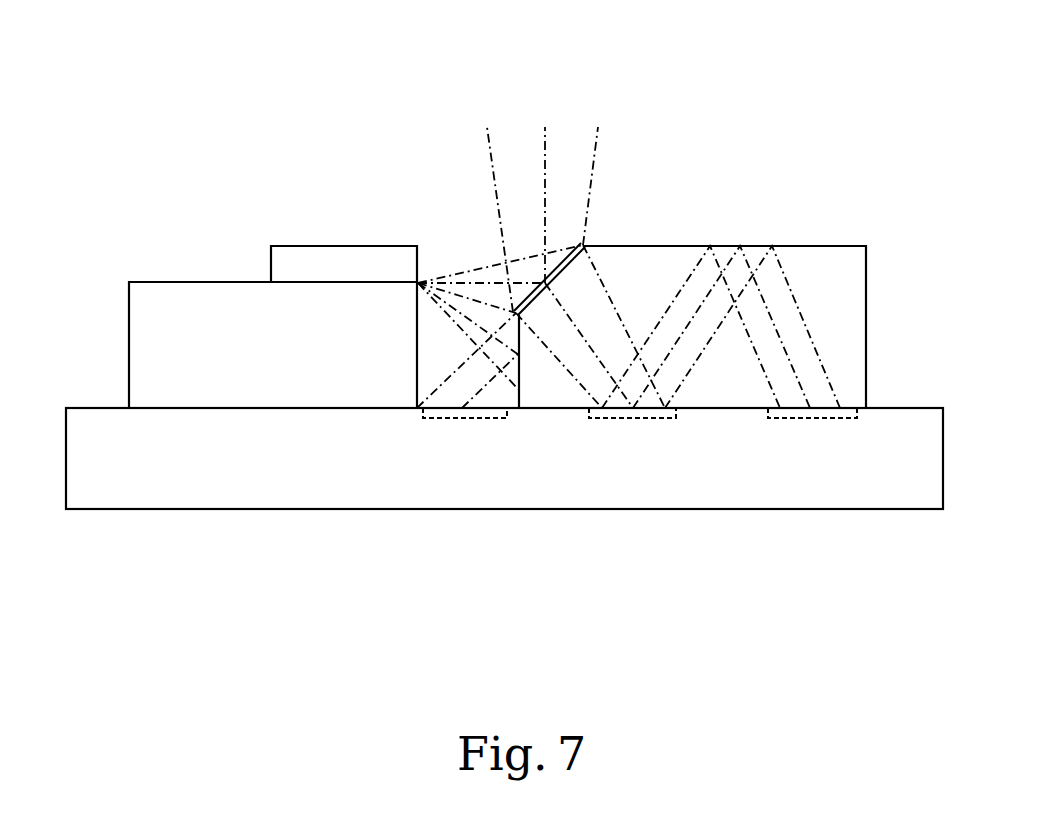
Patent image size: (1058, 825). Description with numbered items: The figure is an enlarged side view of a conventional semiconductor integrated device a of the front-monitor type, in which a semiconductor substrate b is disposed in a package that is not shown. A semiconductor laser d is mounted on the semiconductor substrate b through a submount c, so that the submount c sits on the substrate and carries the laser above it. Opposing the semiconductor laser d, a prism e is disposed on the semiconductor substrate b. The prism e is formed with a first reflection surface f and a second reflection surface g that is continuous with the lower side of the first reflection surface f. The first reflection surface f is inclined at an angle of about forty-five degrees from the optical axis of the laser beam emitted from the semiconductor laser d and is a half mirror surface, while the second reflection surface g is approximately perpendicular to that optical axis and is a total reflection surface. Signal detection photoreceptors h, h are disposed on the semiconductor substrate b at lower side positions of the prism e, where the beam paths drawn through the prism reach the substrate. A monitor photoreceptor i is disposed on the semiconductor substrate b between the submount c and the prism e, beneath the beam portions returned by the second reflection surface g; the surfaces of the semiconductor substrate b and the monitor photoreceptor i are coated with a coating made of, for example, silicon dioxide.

The semiconductor integrated device a is at (807, 102).
The semiconductor substrate b is at (309, 472).
The submount c is at (178, 295).
The semiconductor laser d is at (333, 260).
The prism e is at (805, 260).
The first reflection surface f is at (572, 265).
The second reflection surface g is at (515, 378).
The signal detection photoreceptor h is at (610, 418).
The monitor photoreceptor i is at (445, 418).